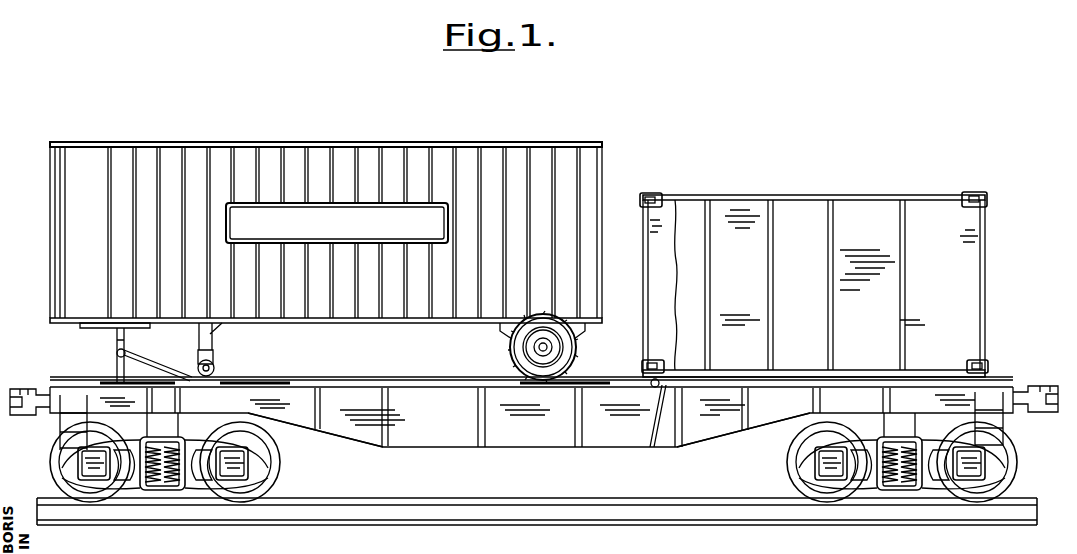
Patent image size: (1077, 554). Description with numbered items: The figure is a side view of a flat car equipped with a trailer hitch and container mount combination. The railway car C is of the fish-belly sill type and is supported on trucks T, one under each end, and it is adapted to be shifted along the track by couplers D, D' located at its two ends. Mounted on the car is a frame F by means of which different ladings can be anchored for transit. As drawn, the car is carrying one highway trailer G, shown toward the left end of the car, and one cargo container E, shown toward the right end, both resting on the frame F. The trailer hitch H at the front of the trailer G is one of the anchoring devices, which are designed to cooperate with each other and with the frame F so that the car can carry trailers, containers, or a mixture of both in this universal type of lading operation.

The highway trailer G is at (337, 140).
The cargo container E is at (808, 192).
The fifth-wheel hitch H is at (117, 343).
The frame F is at (412, 378).
The railway car C is at (362, 445).
The coupler D is at (30, 420).
The coupler D' is at (1035, 426).
The truck T is at (115, 553).